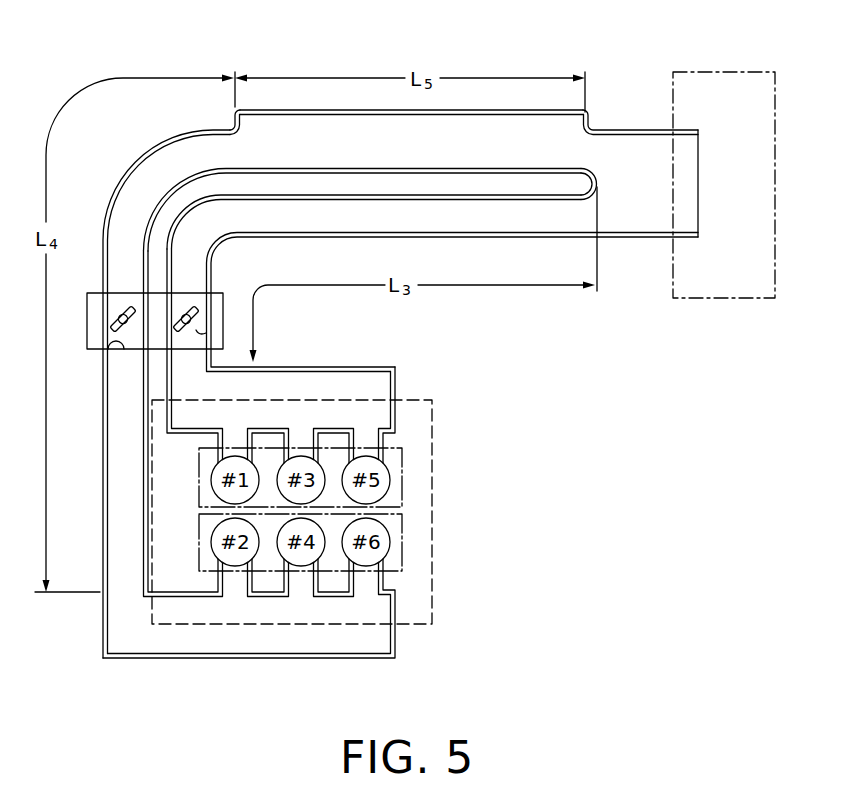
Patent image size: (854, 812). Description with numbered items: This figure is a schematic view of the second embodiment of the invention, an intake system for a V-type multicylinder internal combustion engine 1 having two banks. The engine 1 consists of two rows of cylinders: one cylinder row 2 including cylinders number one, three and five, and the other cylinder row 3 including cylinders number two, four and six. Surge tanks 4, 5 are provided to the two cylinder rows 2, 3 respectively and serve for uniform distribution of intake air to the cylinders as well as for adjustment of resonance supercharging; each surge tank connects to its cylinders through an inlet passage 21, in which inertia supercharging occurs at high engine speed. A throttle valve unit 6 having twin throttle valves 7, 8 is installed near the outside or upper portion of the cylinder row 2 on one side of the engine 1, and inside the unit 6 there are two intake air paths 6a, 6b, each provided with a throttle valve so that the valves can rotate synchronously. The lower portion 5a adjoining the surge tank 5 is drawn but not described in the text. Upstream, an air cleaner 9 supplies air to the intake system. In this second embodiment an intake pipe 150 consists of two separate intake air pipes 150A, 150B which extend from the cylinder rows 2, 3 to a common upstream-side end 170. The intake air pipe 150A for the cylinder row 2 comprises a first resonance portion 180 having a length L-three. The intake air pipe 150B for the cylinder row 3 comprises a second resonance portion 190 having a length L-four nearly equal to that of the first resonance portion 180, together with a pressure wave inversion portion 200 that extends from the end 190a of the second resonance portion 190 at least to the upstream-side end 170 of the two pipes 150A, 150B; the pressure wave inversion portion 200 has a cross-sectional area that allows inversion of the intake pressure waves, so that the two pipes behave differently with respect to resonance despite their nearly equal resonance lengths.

The V-type multicylinder internal combustion engine 1 is at (422, 598).
The cylinder row 2 is at (395, 495).
The cylinder row 3 is at (393, 560).
The surge tank 4 is at (382, 389).
The surge tank 5 is at (380, 642).
The slit in connecting portion 5a is at (148, 590).
The throttle valve unit 6 is at (88, 295).
The intake air path 6a is at (200, 334).
The intake air path 6b is at (113, 352).
The throttle valve 7 is at (194, 311).
The throttle valve 8 is at (117, 328).
The air cleaner 9 is at (723, 288).
The inlet passage 21 is at (383, 437).
The intake pipe 150 is at (632, 240).
The intake air pipe 150A is at (442, 238).
The intake air pipe 150B is at (494, 110).
The upstream-side end 170 is at (597, 186).
The first resonance portion 180 is at (502, 223).
The second resonance portion 190 is at (158, 173).
The end of second resonance portion 190a is at (232, 124).
The pressure wave inversion portion 200 is at (333, 128).